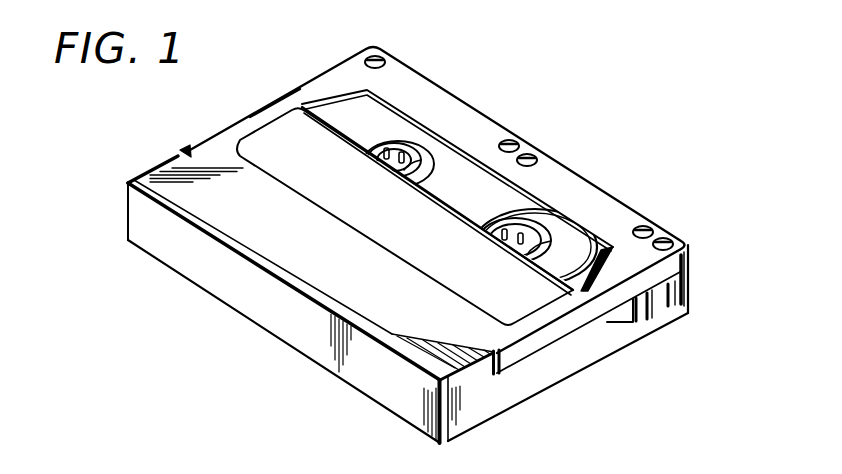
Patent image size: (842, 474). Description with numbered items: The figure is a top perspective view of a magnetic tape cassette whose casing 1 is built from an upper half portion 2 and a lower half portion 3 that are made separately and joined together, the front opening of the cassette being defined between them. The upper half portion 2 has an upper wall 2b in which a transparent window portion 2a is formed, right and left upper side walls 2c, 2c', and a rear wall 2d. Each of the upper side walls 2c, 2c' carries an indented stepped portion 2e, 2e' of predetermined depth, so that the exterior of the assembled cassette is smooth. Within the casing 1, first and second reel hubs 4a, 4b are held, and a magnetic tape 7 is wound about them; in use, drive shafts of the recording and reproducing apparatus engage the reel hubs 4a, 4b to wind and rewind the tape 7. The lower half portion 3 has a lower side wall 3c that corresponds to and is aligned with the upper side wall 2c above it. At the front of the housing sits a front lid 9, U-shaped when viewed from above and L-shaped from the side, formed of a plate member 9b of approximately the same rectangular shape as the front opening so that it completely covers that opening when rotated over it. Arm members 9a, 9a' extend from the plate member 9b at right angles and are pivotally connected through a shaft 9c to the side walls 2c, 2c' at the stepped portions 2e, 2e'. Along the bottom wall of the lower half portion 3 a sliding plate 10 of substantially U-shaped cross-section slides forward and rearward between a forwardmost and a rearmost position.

The casing 1 is at (721, 235).
The upper half portion 2 is at (691, 256).
The transparent window portion 2a is at (468, 163).
The upper wall 2b is at (422, 92).
The upper side wall 2c is at (659, 328).
The upper side wall 2c' is at (276, 79).
The rear wall 2d is at (643, 210).
The indented stepped portion 2e is at (475, 341).
The indented stepped portion 2e' is at (177, 125).
The lower half portion 3 is at (691, 287).
The lower side wall 3c is at (615, 328).
The first reel hub 4a is at (405, 150).
The second reel hub 4b is at (528, 228).
The magnetic tape 7 is at (553, 222).
The front lid 9 is at (268, 322).
The arm member 9a is at (475, 424).
The arm member 9a' is at (179, 150).
The plate member 9b is at (376, 385).
The shaft 9c is at (473, 383).
The sliding plate 10 is at (542, 373).